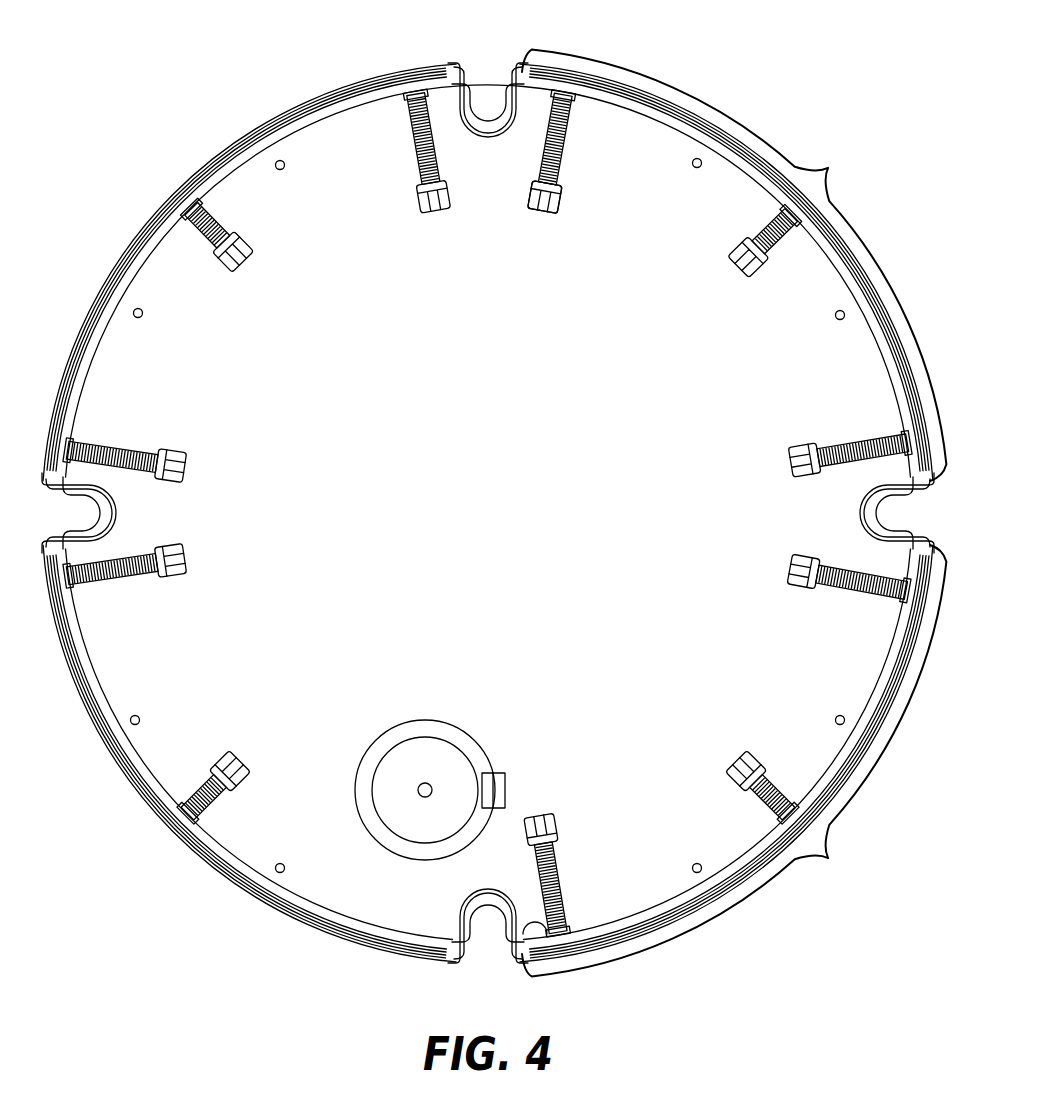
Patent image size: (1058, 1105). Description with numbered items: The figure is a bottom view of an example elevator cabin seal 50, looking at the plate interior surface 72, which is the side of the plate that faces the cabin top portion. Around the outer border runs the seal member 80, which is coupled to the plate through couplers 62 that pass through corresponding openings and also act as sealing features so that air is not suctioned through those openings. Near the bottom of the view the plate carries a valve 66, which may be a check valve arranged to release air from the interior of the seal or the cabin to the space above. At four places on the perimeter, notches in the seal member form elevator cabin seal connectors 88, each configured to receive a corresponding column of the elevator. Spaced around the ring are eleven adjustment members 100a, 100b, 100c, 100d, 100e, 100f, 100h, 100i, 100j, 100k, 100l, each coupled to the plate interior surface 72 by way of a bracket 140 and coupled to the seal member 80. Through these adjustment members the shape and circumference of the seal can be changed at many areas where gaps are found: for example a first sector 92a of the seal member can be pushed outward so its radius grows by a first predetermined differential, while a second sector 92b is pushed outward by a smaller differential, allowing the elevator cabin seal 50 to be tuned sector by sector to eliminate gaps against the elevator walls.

The elevator cabin seal 50 is at (770, 39).
The coupler 62 is at (146, 318).
The valve 66 is at (426, 776).
The plate interior surface 72 is at (200, 297).
The seal member 80 is at (288, 106).
The elevator cabin seal connector 88 is at (487, 86).
The first sector 92a is at (734, 265).
The second sector 92b is at (734, 760).
The adjustment member 100a is at (570, 150).
The adjustment member 100b is at (857, 445).
The adjustment member 100c is at (777, 258).
The adjustment member 100d is at (863, 599).
The adjustment member 100e is at (573, 867).
The adjustment member 100f is at (778, 775).
The adjustment member 100h is at (136, 596).
The adjustment member 100i is at (236, 806).
The adjustment member 100j is at (122, 439).
The adjustment member 100k is at (410, 156).
The adjustment member 100l is at (236, 235).
The bracket 140 is at (549, 218).